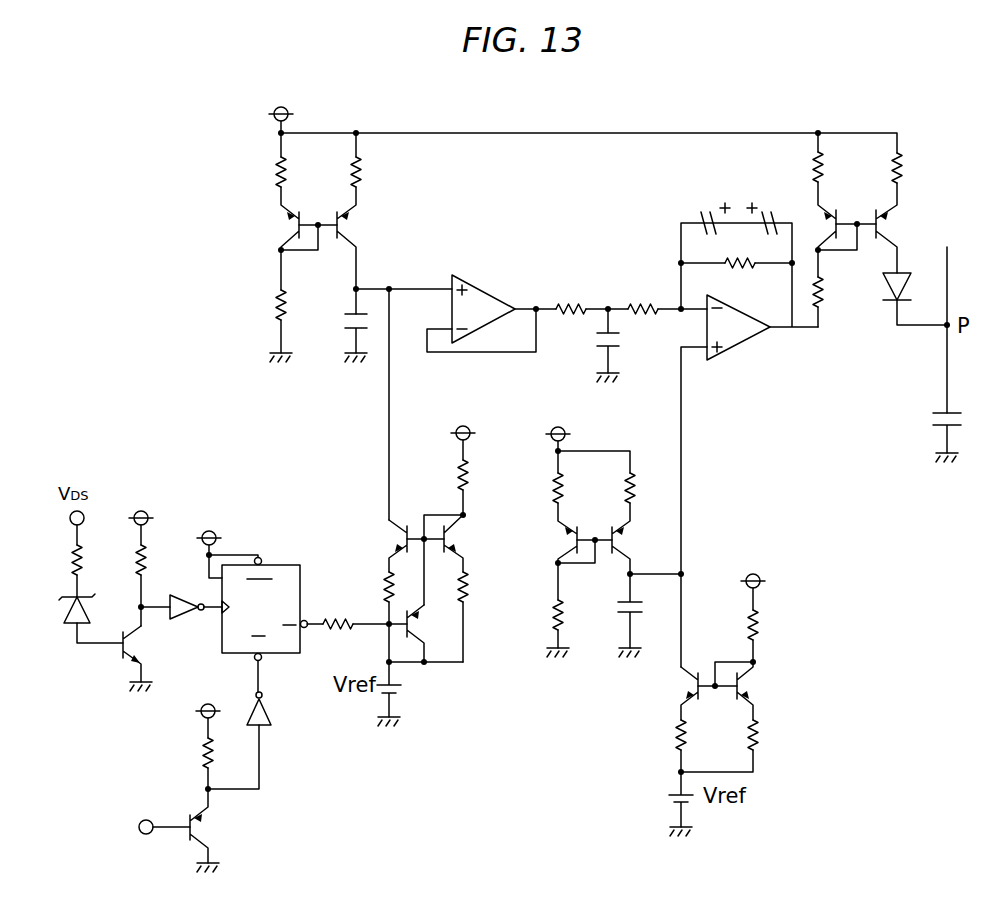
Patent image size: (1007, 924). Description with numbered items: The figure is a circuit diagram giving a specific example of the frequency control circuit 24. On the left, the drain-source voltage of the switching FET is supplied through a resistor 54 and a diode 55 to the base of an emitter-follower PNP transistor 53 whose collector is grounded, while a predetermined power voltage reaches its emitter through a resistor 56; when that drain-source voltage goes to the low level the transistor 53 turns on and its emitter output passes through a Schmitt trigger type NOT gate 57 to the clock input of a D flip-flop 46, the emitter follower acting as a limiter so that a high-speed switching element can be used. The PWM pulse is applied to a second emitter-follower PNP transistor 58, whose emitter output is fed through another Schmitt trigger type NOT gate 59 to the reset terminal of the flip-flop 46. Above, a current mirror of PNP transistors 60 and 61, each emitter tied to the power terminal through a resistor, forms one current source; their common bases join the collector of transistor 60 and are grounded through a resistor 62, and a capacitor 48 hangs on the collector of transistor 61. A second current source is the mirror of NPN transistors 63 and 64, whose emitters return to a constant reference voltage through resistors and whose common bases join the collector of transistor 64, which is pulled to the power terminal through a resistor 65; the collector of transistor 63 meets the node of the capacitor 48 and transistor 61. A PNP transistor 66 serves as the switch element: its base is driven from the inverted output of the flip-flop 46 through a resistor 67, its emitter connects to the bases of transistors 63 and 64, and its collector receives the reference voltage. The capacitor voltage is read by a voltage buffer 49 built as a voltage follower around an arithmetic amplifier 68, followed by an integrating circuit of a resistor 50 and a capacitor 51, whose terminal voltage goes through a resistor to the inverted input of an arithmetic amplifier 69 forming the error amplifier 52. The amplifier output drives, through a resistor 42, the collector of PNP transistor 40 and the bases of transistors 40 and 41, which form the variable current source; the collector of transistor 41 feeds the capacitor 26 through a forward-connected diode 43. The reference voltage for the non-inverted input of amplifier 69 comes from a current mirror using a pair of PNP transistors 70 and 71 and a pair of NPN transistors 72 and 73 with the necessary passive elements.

The frequency control circuit 24 is at (108, 256).
The capacitor 26 is at (942, 413).
The PNP transistor 40 is at (828, 218).
The PNP transistor 41 is at (890, 218).
The resistor 42 is at (823, 292).
The diode 43 is at (882, 282).
The D flip-flop 46 is at (292, 562).
The capacitor 48 is at (345, 316).
The voltage buffer 49 is at (495, 272).
The resistor 50 is at (575, 305).
The capacitor 51 is at (598, 333).
The error amplifier 52 is at (748, 435).
The PNP transistor 53 is at (115, 662).
The resistor 54 is at (88, 562).
The diode 55 is at (70, 602).
The resistor 56 is at (143, 560).
The Schmitt trigger type NOT gate 57 is at (180, 612).
The PNP transistor 58 is at (183, 838).
The Schmitt trigger type NOT gate 59 is at (275, 706).
The PNP transistor 60 is at (290, 220).
The PNP transistor 61 is at (352, 226).
The resistor 62 is at (275, 308).
The NPN transistor 63 is at (397, 530).
The NPN transistor 64 is at (455, 530).
The resistor 65 is at (460, 480).
The PNP transistor 66 is at (420, 635).
The resistor 67 is at (335, 620).
The arithmetic amplifier 68 is at (500, 298).
The arithmetic amplifier 69 is at (742, 347).
The PNP transistor 70 is at (570, 532).
The PNP transistor 71 is at (620, 546).
The NPN transistor 72 is at (690, 688).
The NPN transistor 73 is at (752, 686).